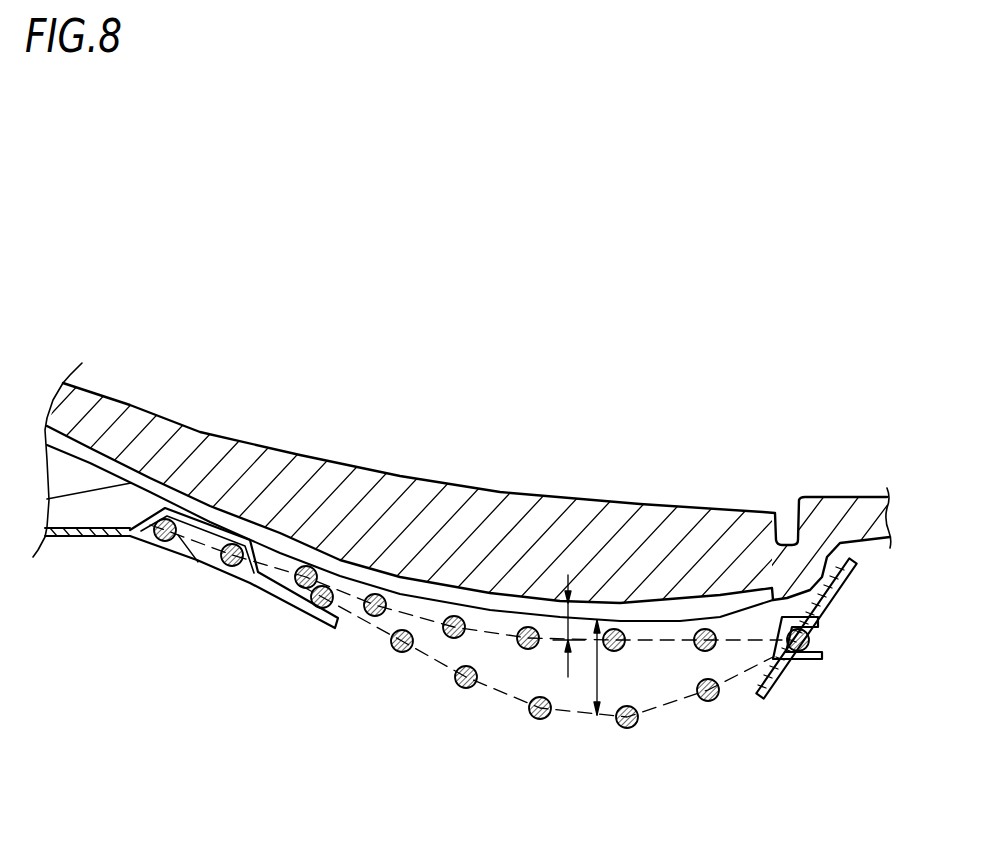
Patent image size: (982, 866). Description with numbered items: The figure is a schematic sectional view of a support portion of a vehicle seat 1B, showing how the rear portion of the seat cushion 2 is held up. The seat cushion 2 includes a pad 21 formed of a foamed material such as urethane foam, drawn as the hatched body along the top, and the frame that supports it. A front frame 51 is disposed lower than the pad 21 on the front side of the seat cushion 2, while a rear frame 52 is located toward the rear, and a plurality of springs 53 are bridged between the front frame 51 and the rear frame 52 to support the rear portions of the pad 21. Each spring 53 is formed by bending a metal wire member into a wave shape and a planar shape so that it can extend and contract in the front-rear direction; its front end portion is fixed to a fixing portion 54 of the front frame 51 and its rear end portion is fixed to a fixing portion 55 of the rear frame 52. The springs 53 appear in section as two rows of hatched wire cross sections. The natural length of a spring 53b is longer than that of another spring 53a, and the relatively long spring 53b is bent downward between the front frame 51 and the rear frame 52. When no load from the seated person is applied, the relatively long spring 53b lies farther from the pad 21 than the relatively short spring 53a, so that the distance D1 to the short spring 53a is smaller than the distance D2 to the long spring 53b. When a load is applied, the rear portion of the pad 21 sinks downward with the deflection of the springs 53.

The vehicle seat 1B is at (298, 98).
The seat cushion 2 is at (136, 395).
The pad 21 is at (263, 473).
The front frame 51 is at (63, 538).
The rear frame 52 is at (798, 660).
The springs 53 is at (479, 680).
The spring 53a is at (528, 650).
The spring 53b is at (540, 720).
The fixing portion 54 is at (190, 512).
The fixing portion 55 is at (815, 612).
The distance D1 is at (573, 600).
The distance D2 is at (610, 667).